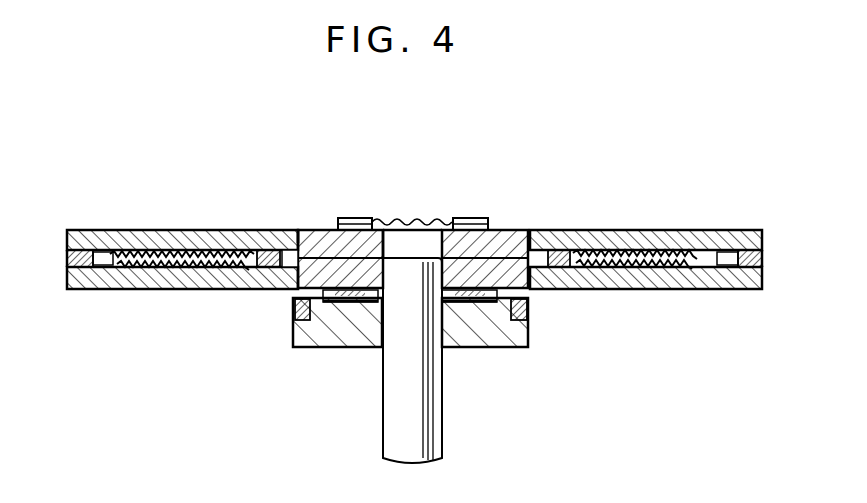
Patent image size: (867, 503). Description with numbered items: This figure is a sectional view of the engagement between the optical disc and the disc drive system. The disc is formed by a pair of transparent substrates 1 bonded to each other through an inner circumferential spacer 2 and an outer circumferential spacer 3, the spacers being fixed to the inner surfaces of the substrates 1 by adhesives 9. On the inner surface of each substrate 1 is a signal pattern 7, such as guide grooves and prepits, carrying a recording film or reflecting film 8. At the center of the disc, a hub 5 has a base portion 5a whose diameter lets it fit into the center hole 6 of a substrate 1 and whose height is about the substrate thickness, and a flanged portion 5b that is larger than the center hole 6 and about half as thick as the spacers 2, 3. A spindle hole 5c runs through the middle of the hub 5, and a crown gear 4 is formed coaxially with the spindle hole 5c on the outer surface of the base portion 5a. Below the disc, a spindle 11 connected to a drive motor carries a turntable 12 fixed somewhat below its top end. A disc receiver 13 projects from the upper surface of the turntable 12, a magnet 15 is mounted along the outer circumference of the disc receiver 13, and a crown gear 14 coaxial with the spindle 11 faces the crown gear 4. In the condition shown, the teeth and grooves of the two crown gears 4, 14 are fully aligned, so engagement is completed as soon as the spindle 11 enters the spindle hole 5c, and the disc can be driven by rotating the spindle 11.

The substrate 1 is at (597, 231).
The inner circumferential spacer 2 is at (561, 229).
The outer circumferential spacer 3 is at (749, 248).
The crown gear 4 is at (468, 218).
The hub 5 is at (386, 209).
The base portion 5a is at (331, 222).
The flanged portion 5b is at (285, 228).
The spindle hole 5c is at (387, 246).
The center hole 6 is at (292, 249).
The signal pattern 7 is at (651, 245).
The recording film or reflecting film 8 is at (693, 257).
The adhesive 9 is at (78, 245).
The spindle 11 is at (390, 437).
The turntable 12 is at (507, 333).
The disc receiver 13 is at (314, 300).
The crown gear 14 is at (473, 307).
The magnet 15 is at (527, 307).